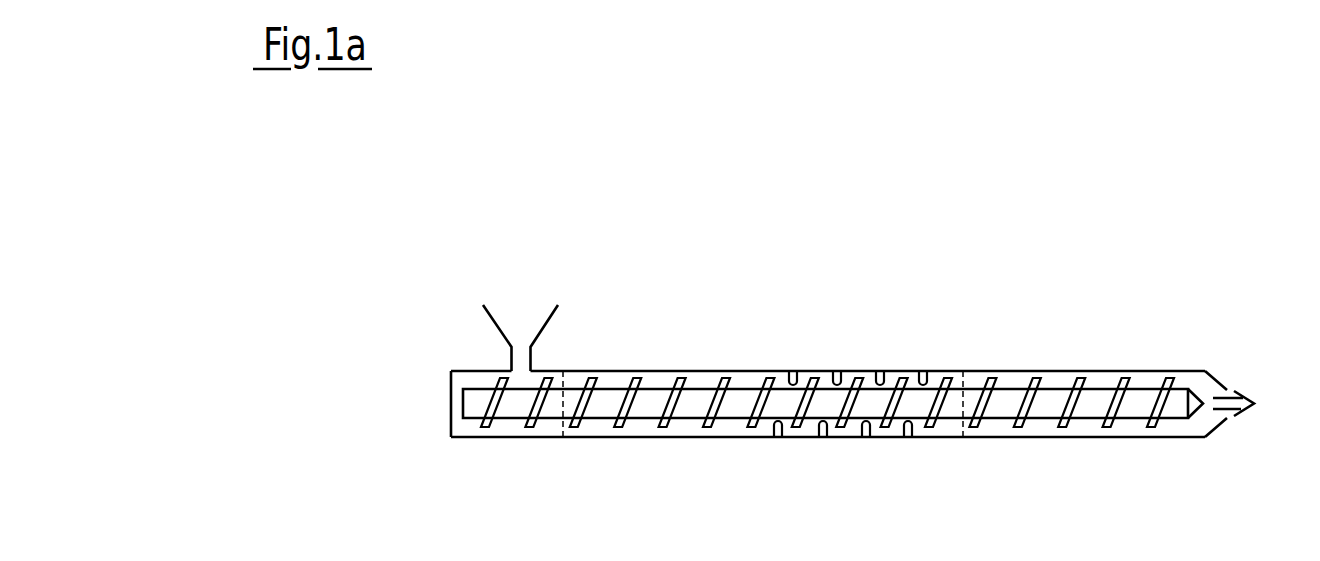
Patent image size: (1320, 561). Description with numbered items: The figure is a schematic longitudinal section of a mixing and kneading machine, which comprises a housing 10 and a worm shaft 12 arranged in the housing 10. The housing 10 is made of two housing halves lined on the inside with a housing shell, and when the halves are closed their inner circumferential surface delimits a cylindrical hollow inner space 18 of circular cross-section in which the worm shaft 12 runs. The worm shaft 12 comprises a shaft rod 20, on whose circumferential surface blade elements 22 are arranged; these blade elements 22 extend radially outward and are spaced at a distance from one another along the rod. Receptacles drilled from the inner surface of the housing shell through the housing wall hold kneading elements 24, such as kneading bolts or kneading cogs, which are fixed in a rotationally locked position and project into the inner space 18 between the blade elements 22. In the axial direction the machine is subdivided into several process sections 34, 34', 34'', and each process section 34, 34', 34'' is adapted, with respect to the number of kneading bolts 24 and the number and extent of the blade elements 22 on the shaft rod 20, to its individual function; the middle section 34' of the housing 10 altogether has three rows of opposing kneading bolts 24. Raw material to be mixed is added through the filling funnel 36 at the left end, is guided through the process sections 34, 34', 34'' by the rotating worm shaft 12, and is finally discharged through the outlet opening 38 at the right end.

The housing 10 is at (893, 371).
The worm shaft 12 is at (475, 402).
The inner space 18 is at (595, 427).
The shaft rod 20 is at (1100, 400).
The blade elements 22 is at (1032, 378).
The kneading elements 24 is at (880, 372).
The process section 34 is at (507, 444).
The process section 34' is at (763, 444).
The process section 34'' is at (1084, 444).
The filling funnel 36 is at (520, 322).
The outlet opening 38 is at (1230, 415).